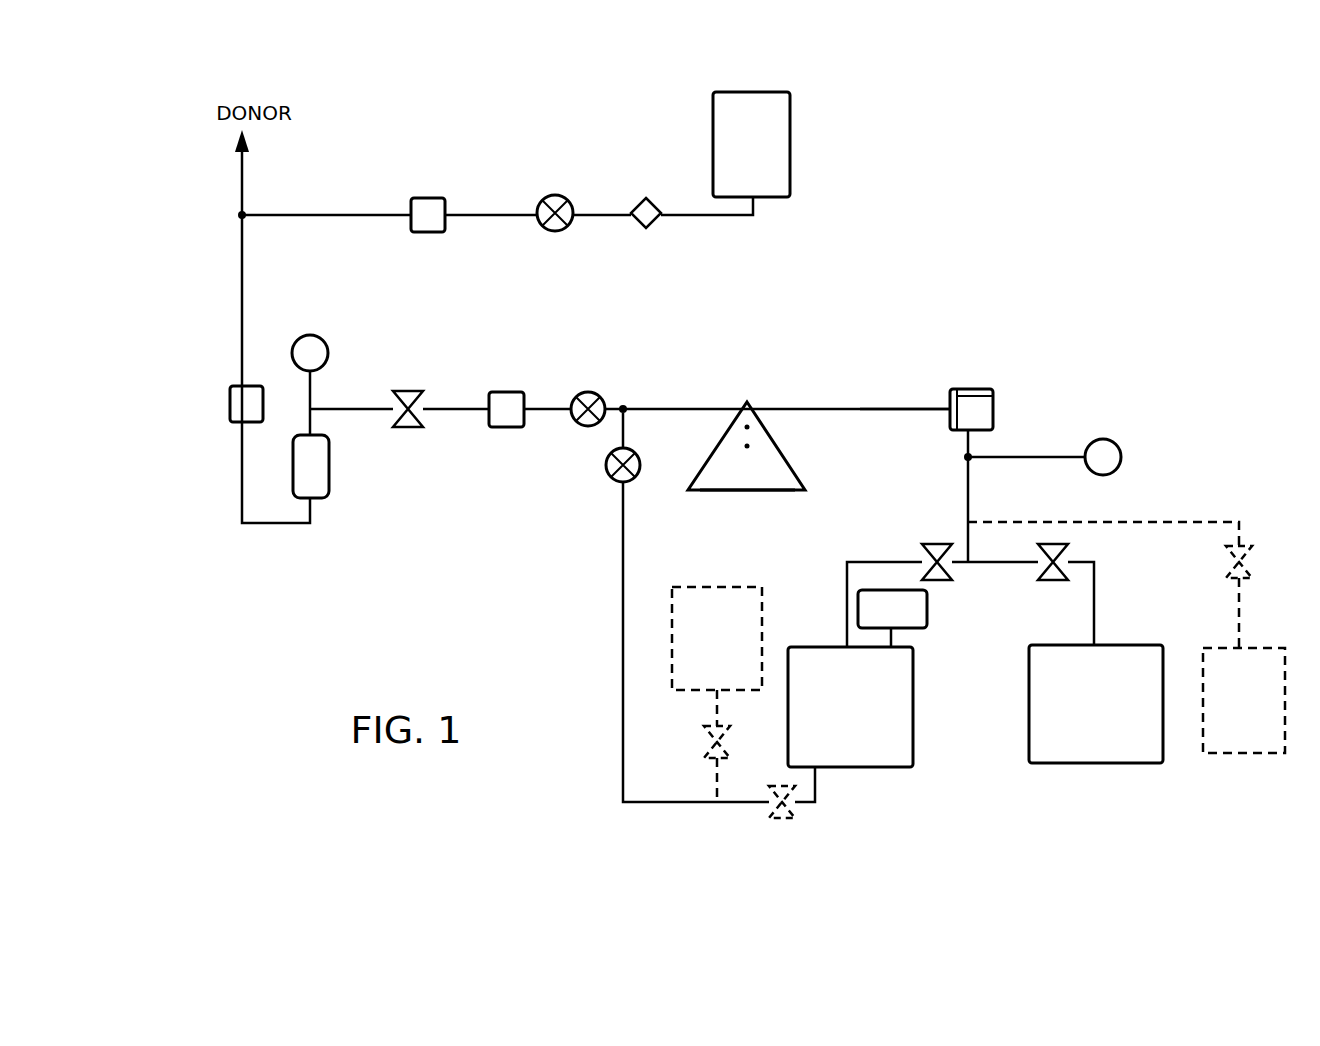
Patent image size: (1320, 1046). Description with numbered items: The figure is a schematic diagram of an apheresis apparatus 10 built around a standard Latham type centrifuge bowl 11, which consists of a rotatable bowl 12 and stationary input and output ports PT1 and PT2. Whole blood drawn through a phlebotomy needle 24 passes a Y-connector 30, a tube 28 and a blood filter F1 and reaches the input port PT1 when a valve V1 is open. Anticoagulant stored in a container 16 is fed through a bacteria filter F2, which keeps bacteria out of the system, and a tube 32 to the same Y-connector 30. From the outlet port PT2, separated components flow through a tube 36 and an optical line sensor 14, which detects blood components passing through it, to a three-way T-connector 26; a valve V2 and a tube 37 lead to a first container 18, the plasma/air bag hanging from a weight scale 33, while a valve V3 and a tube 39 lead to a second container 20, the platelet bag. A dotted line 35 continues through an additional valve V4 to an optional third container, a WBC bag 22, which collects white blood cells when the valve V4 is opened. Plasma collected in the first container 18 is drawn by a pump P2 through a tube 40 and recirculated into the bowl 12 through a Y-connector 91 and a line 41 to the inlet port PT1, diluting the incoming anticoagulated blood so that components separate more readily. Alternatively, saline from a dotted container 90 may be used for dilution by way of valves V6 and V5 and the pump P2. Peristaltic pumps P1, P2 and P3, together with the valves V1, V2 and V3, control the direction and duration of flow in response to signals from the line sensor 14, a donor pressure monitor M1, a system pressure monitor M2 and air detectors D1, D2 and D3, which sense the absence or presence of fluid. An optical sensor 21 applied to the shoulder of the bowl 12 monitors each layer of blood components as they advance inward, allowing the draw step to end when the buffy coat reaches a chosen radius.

The apheresis apparatus 10 is at (932, 237).
The centrifuge bowl 11 is at (800, 476).
The rotatable bowl 12 is at (760, 490).
The line sensor 14 is at (968, 389).
The anticoagulant container 16 is at (790, 138).
The first container 18 is at (866, 767).
The second container 20 is at (1097, 763).
The optical sensor 21 is at (772, 430).
The WBC bag 22 is at (1248, 753).
The phlebotomy needle 24 is at (240, 165).
The 3-way T-connector 26 is at (966, 457).
The tube 28 is at (242, 468).
The Y-connector 30 is at (238, 215).
The tube 32 is at (332, 218).
The weight scale 33 is at (927, 620).
The WBC bag line 35 is at (1070, 522).
The tube 36 is at (893, 409).
The tube 37 is at (867, 562).
The tube 39 is at (1094, 562).
The tube 40 is at (623, 657).
The line 41 is at (665, 409).
The container 90 is at (712, 587).
The Y-connector 91 is at (623, 409).
The air detector D1 is at (230, 405).
The air detector D2 is at (505, 392).
The air detector D3 is at (428, 232).
The peristaltic pump P1 is at (575, 423).
The peristaltic pump P2 is at (610, 480).
The peristaltic pump P3 is at (556, 231).
The blood filter F1 is at (329, 485).
The bacteria filter F2 is at (647, 228).
The donor pressure monitor M1 is at (327, 344).
The system pressure monitor M2 is at (1121, 457).
The valve V1 is at (410, 391).
The valve V2 is at (940, 582).
The valve V3 is at (1053, 580).
The valve V4 is at (1248, 560).
The valve V5 is at (770, 812).
The valve V6 is at (705, 737).
The input port PT1 is at (745, 405).
The output port PT2 is at (750, 405).